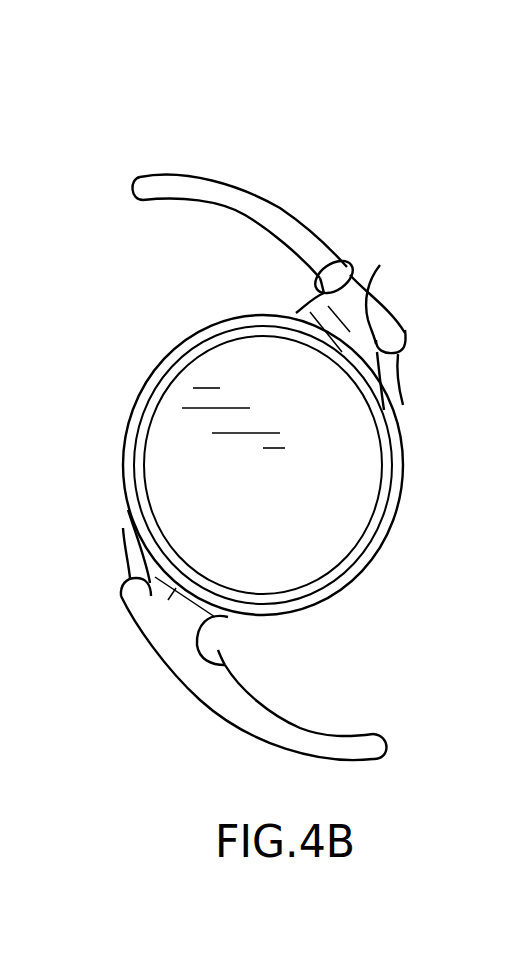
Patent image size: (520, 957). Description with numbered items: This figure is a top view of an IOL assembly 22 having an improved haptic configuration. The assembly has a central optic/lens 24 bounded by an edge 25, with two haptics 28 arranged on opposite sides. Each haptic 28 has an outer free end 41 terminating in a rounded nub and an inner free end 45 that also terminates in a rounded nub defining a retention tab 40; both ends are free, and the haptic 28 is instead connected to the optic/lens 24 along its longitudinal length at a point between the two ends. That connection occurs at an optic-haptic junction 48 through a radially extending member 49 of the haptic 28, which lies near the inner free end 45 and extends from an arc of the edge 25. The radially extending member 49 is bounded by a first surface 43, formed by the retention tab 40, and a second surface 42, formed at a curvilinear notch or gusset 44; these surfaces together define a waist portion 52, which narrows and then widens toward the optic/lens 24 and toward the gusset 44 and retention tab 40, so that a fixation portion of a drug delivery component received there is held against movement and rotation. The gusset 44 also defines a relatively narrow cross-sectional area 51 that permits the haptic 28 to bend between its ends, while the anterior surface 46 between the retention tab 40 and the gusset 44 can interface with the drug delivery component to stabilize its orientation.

The IOL assembly 22 is at (226, 466).
The optic/lens 24 is at (153, 478).
The edge 25 is at (372, 597).
The haptic 28 is at (270, 428).
The retention tab 40 is at (270, 502).
The outer free end 41 is at (137, 191).
The second surface 42 is at (308, 308).
The first surface 43 is at (390, 356).
The gusset 44 is at (298, 282).
The inner free end 45 is at (407, 352).
The anterior surface 46 is at (360, 332).
The optic-haptic junction 48 is at (323, 330).
The radially extending member 49 is at (331, 307).
The narrow cross-sectional area 51 is at (355, 265).
The waist portion 52 is at (384, 291).